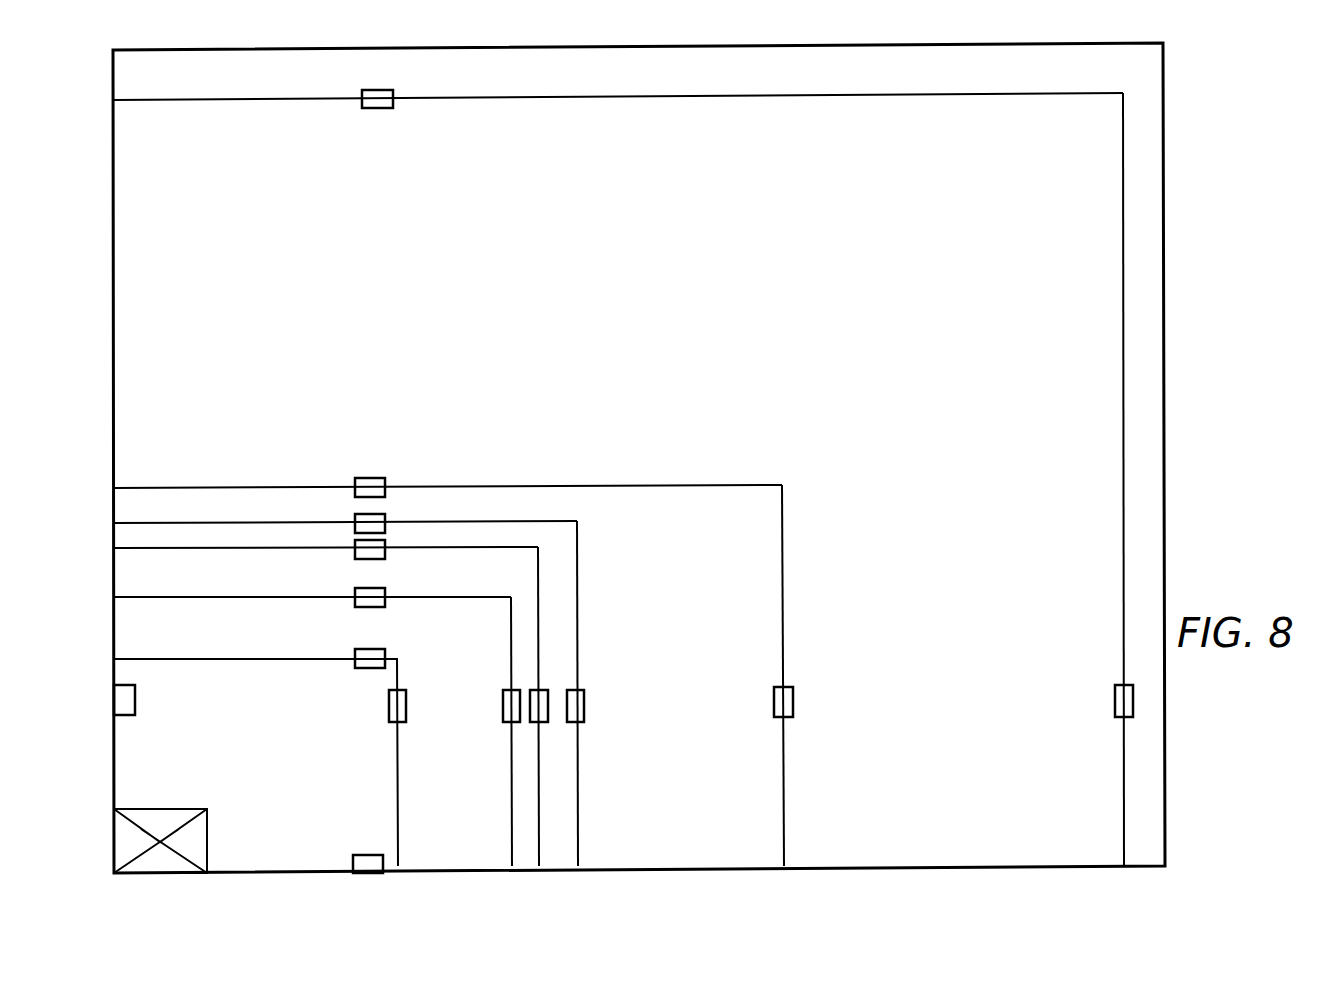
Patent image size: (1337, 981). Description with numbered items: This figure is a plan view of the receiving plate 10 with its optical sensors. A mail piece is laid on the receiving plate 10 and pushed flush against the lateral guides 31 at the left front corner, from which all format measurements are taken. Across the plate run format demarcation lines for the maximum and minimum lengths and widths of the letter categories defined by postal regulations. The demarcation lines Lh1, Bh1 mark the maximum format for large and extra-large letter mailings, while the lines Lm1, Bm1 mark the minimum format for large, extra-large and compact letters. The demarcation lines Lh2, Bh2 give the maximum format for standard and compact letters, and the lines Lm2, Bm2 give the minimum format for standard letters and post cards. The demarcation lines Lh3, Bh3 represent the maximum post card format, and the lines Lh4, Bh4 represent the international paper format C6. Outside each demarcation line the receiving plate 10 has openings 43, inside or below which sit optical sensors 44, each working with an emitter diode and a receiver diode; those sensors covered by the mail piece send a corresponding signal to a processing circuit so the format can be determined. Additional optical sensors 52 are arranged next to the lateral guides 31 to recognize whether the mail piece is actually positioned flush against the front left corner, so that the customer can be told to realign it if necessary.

The receiving plate 10 is at (1150, 392).
The lateral guides 31 is at (114, 778).
The openings 43 is at (377, 108).
The optical sensors 44 is at (383, 108).
The additional optical sensors 52 is at (118, 698).
The demarcation line Lh1 is at (491, 101).
The demarcation line Lh2 is at (535, 484).
The demarcation line Lh3 is at (458, 521).
The demarcation line Lh4 is at (440, 550).
The demarcation line Lm1 is at (267, 662).
The demarcation line Lm2 is at (245, 600).
The demarcation line Bh1 is at (1123, 385).
The demarcation line Bh2 is at (783, 822).
The demarcation line Bh3 is at (578, 825).
The demarcation line Bh4 is at (537, 815).
The demarcation line Bm1 is at (396, 776).
The demarcation line Bm2 is at (510, 757).